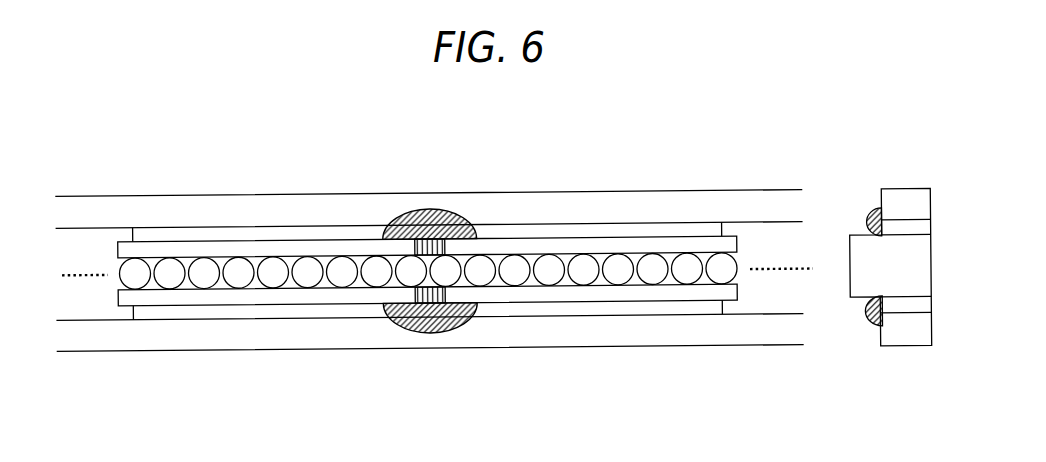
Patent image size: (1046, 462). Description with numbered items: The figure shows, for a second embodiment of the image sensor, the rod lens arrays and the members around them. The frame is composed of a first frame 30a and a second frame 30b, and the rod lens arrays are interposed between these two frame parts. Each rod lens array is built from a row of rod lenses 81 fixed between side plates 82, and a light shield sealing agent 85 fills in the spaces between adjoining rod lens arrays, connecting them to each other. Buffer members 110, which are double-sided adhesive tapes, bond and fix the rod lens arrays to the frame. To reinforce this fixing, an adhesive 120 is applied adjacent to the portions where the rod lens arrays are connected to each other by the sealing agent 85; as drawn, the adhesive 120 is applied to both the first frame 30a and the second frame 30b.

The first frame 30a is at (167, 199).
The second frame 30b is at (168, 338).
The rod lenses 81 is at (270, 260).
The side plates 82 is at (549, 247).
The light shield sealing agent 85 is at (429, 209).
The buffer members 110 is at (647, 227).
The adhesive 120 is at (430, 332).